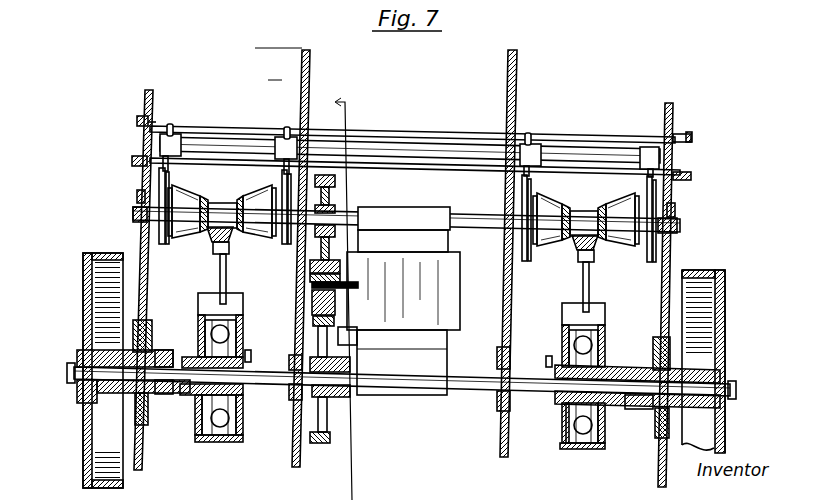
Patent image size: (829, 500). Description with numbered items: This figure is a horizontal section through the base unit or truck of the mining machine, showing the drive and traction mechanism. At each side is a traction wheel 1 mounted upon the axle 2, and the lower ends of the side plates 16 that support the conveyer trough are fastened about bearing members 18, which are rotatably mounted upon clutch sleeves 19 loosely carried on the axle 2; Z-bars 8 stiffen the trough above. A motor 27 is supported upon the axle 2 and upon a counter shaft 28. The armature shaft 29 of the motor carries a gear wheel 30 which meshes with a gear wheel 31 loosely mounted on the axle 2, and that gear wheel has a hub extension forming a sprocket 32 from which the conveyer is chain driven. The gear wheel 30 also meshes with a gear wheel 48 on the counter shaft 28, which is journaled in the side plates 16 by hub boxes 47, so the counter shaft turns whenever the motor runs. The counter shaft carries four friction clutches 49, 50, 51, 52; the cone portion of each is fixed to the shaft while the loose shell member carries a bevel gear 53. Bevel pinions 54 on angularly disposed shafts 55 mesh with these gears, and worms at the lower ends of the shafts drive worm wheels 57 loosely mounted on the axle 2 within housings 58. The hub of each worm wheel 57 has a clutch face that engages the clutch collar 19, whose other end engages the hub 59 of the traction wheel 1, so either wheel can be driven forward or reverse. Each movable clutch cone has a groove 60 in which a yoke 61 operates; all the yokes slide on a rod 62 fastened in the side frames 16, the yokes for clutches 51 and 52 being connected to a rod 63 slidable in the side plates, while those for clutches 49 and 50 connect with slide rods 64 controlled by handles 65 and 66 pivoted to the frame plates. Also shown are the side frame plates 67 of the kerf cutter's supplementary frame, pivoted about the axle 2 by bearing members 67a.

The traction wheels 1 is at (100, 283).
The axle 2 is at (68, 373).
The Z-bars 8 is at (334, 296).
The side plates 16 is at (144, 248).
The bearing members 18 is at (134, 398).
The clutch sleeves 19 is at (164, 396).
The motor 27 is at (440, 290).
The counter shaft 28 is at (487, 230).
The armature shaft 29 is at (316, 296).
The gear wheel 30 is at (316, 282).
The gear wheel 31 is at (316, 314).
The sprocket 32 is at (342, 398).
The hub boxes 47 is at (136, 206).
The gear wheel 48 is at (336, 183).
The friction clutch 49 is at (625, 212).
The friction clutch 50 is at (553, 206).
The friction clutch 51 is at (260, 200).
The friction clutch 52 is at (191, 202).
The bevel gear 53 is at (210, 208).
The bevel pinions 54 is at (213, 239).
The angularly disposed shafts 55 is at (227, 268).
The worm wheels 57 is at (234, 421).
The housings 58 is at (248, 356).
The hubs 59 is at (107, 352).
The groove 60 is at (164, 244).
The yokes 61 is at (163, 173).
The rod 62 is at (398, 148).
The rod 63 is at (451, 133).
The slide rods 64 is at (578, 167).
The handle 65 is at (137, 122).
The handle 66 is at (133, 160).
The side frame plates 67 is at (312, 64).
The bearing members 67a is at (290, 395).